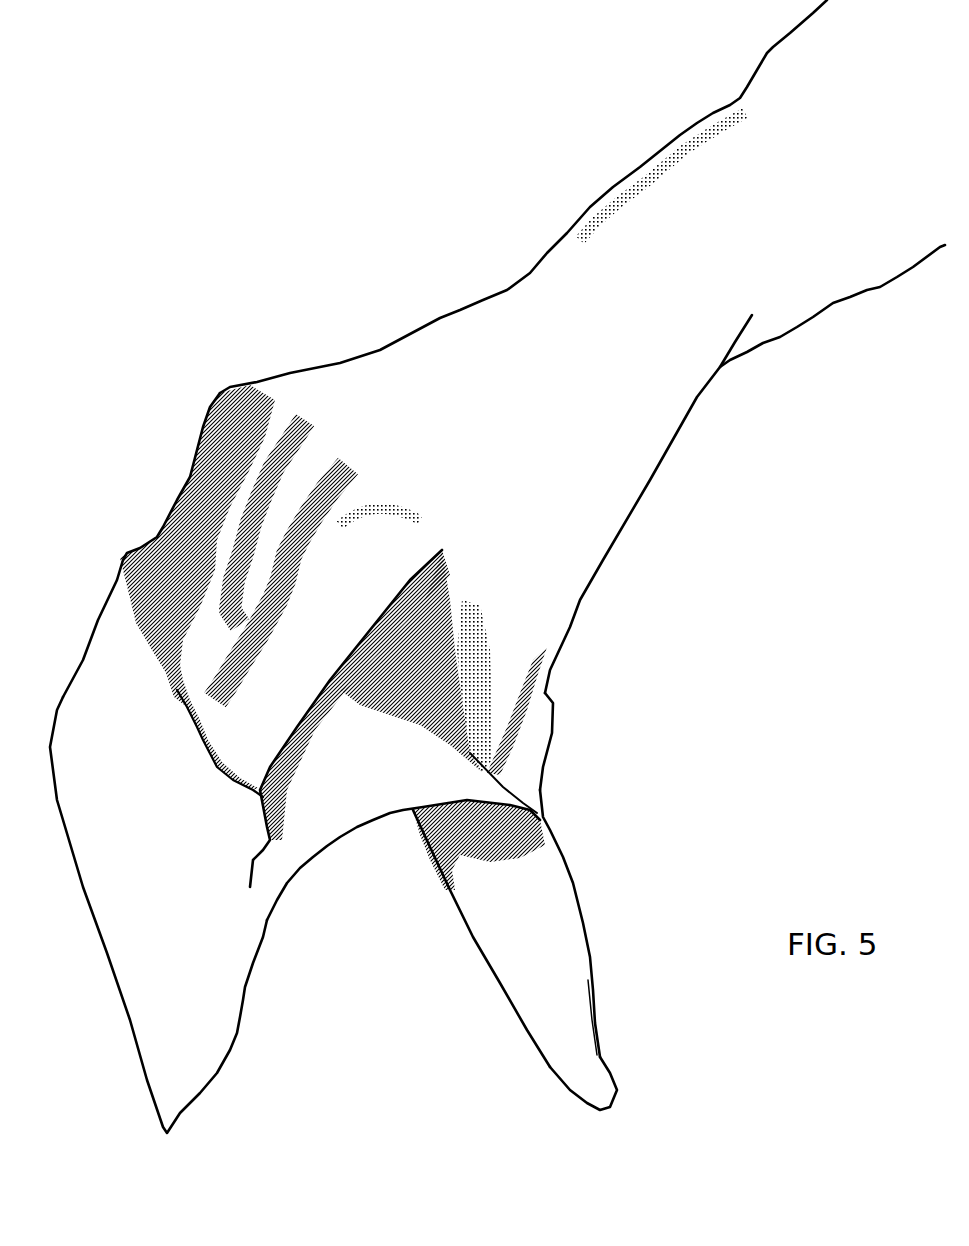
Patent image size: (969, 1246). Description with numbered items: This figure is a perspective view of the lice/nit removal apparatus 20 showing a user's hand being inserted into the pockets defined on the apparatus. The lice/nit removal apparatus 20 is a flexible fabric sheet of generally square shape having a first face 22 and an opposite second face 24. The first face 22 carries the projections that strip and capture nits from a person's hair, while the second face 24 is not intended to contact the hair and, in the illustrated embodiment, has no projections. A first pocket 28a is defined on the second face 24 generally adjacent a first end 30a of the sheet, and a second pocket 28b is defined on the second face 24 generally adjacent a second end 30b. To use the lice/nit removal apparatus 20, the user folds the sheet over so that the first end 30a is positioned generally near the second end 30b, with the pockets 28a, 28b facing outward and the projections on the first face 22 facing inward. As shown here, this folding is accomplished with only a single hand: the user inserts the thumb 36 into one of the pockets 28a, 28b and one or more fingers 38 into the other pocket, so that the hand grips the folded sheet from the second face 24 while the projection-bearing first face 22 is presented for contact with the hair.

The lice/nit removal apparatus 20 is at (570, 1103).
The first face 22 is at (500, 930).
The second face 24 is at (363, 780).
The first pocket 28a is at (525, 762).
The second pocket 28b is at (250, 800).
The first end 30a is at (600, 1110).
The second end 30b is at (112, 963).
The thumb 36 is at (500, 723).
The fingers 38 is at (157, 540).